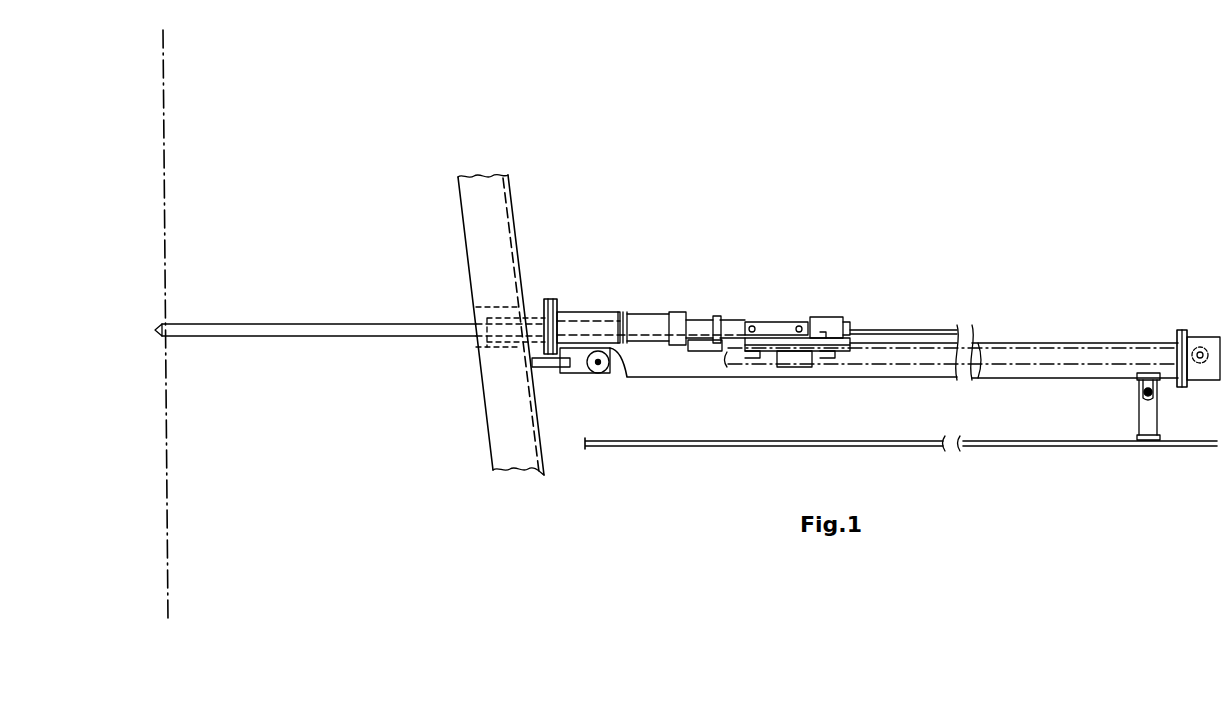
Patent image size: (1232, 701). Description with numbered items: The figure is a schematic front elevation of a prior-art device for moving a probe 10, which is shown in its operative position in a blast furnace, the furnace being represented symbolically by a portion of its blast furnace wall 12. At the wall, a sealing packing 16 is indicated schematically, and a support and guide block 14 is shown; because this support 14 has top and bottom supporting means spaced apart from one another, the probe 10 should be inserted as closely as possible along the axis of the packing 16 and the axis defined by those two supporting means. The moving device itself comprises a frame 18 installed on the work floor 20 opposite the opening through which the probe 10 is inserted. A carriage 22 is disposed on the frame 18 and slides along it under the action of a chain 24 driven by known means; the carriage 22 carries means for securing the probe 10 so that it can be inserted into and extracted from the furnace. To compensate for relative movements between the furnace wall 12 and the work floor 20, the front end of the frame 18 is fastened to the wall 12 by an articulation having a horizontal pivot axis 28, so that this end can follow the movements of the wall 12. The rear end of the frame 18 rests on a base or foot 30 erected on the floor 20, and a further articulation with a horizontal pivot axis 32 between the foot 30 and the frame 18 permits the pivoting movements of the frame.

The probe 10 is at (278, 338).
The blast furnace wall 12 is at (512, 236).
The support and guide block 14 is at (510, 350).
The sealing packing 16 is at (645, 313).
The frame 18 is at (1047, 343).
The work floor 20 is at (722, 443).
The carriage 22 is at (775, 322).
The chain 24 is at (920, 335).
The horizontal pivot axis 28 is at (596, 364).
The base or foot 30 is at (1152, 417).
The horizontal pivot axis 32 is at (1145, 395).